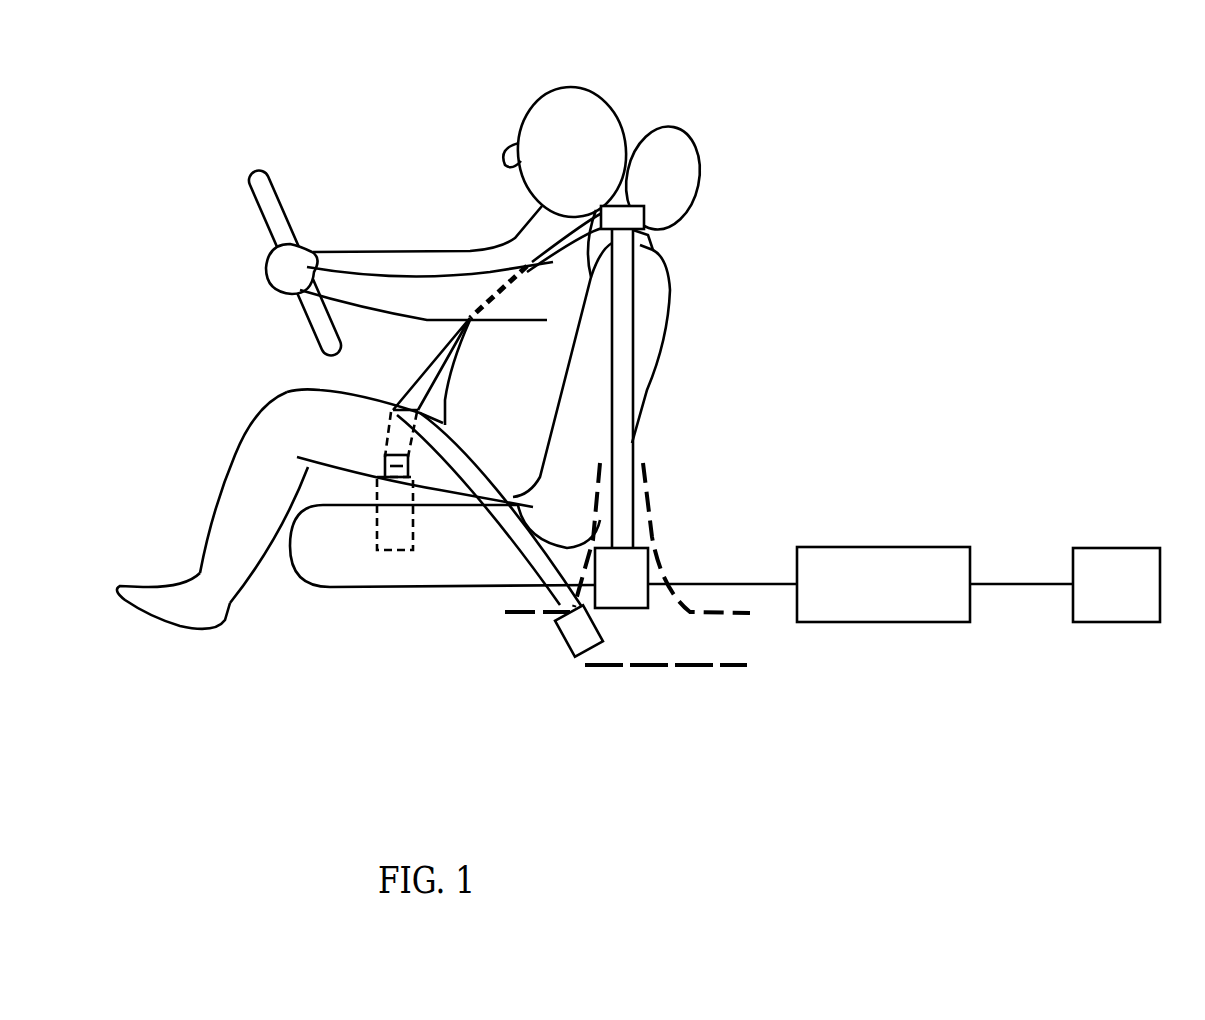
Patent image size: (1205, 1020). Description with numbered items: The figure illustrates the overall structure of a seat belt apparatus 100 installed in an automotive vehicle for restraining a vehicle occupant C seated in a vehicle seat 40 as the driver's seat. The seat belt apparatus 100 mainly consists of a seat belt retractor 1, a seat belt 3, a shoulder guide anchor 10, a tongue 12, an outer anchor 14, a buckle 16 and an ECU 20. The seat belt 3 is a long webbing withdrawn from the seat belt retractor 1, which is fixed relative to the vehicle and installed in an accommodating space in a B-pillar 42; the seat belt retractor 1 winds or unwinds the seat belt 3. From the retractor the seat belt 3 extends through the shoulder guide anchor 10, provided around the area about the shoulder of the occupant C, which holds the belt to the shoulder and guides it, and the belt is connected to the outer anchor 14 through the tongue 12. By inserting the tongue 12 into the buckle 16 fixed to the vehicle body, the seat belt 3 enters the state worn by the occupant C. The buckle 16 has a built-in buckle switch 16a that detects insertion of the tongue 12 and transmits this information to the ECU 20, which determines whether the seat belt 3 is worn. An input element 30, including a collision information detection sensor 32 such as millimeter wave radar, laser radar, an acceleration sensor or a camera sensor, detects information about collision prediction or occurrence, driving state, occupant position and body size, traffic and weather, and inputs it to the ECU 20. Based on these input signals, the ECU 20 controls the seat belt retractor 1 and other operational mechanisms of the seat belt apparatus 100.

The seat belt apparatus 100 is at (641, 374).
The vehicle occupant C is at (477, 242).
The vehicle seat 40 is at (668, 307).
The B-pillar 42 is at (653, 523).
The seat belt 3 is at (633, 448).
The shoulder guide anchor 10 is at (641, 208).
The tongue 12 is at (382, 460).
The buckle 16 is at (415, 565).
The buckle switch 16a is at (400, 537).
The outer anchor 14 is at (575, 630).
The seat belt retractor 1 is at (625, 610).
The ECU 20 is at (910, 548).
The input element 30 is at (1119, 529).
The collision information detection sensor 32 is at (1098, 548).